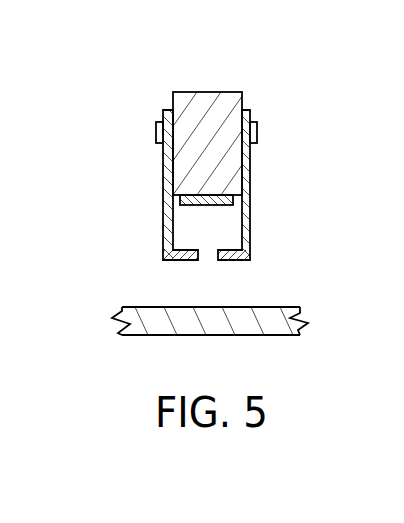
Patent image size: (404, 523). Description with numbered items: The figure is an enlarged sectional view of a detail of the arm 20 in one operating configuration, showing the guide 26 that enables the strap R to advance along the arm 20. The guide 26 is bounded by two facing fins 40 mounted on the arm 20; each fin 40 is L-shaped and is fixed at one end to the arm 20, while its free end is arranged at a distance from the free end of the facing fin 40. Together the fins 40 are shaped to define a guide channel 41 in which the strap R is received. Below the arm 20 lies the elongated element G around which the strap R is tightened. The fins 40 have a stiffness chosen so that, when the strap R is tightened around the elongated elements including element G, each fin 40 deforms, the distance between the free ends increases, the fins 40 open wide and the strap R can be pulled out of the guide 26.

The arm 20 is at (203, 97).
The guide 26 is at (142, 200).
The fin 40 is at (165, 228).
The guide channel 41 is at (202, 225).
The strap R is at (211, 193).
The elongated element G is at (242, 311).